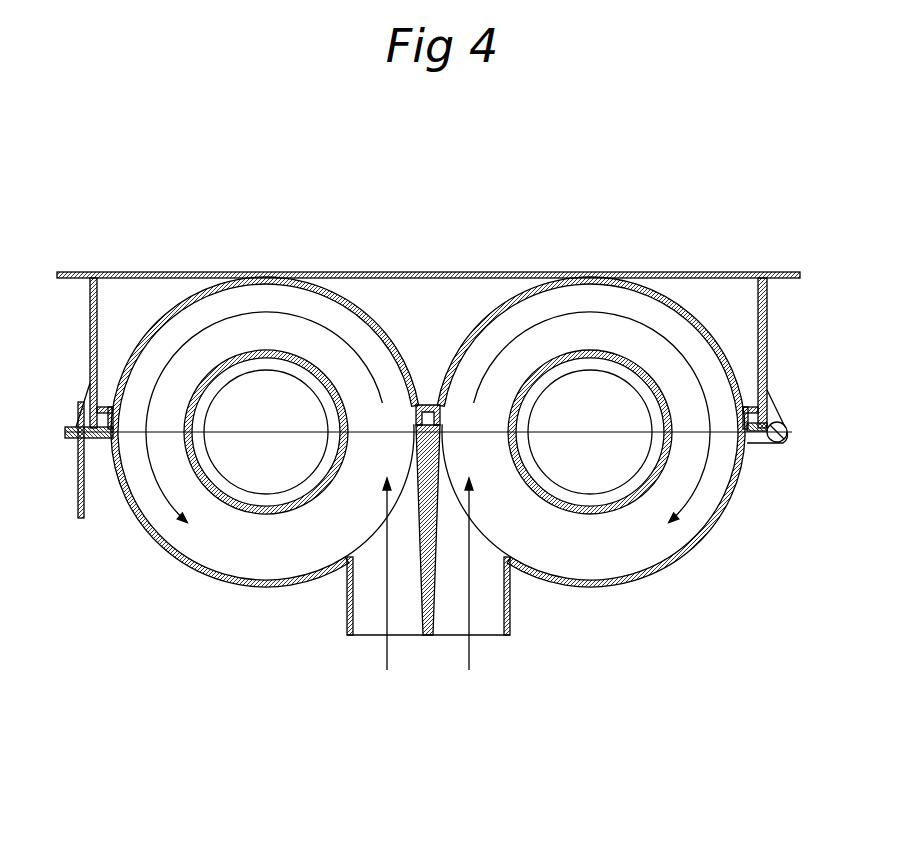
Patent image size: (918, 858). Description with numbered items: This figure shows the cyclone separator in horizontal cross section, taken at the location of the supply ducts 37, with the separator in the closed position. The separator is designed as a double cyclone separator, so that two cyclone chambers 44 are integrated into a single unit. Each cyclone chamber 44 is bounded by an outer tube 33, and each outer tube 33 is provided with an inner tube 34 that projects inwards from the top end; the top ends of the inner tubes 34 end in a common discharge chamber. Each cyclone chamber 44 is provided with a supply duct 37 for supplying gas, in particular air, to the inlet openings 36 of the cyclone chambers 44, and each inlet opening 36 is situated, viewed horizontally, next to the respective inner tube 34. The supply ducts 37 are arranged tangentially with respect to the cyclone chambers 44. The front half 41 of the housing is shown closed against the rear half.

The outer tube 33 is at (213, 578).
The inner tube 34 is at (267, 350).
The inlet opening 36 is at (350, 557).
The supply duct 37 is at (454, 617).
The front half 41 is at (592, 588).
The cyclone chamber 44 is at (152, 505).